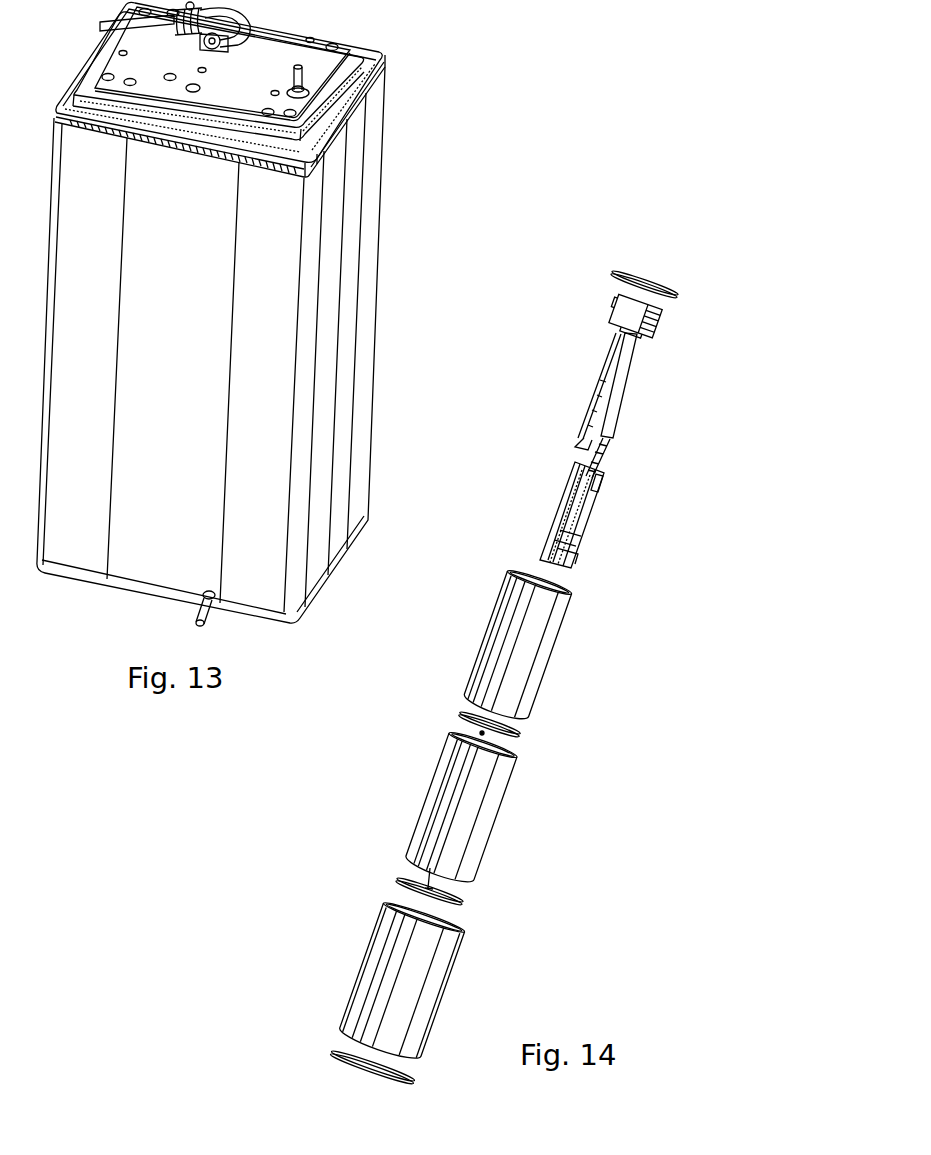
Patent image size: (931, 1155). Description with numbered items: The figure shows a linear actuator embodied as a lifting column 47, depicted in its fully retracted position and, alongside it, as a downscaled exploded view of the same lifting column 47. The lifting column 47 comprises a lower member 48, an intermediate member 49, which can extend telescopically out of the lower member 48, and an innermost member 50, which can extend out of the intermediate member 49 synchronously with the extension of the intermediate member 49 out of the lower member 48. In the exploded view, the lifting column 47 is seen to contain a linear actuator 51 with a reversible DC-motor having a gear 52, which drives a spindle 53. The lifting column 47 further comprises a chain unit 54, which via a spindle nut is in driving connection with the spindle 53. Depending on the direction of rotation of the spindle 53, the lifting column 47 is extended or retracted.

In FIG. 13, the lifting column 47 is at (405, 153).
In FIG. 14, the lower member 48 is at (418, 985).
In FIG. 14, the intermediate member 49 is at (475, 805).
In FIG. 14, the innermost member 50 is at (528, 656).
In FIG. 14, the linear actuator 51 is at (630, 418).
In FIG. 14, the gear 52 is at (623, 320).
In FIG. 14, the spindle 53 is at (618, 403).
In FIG. 14, the chain unit 54 is at (605, 522).